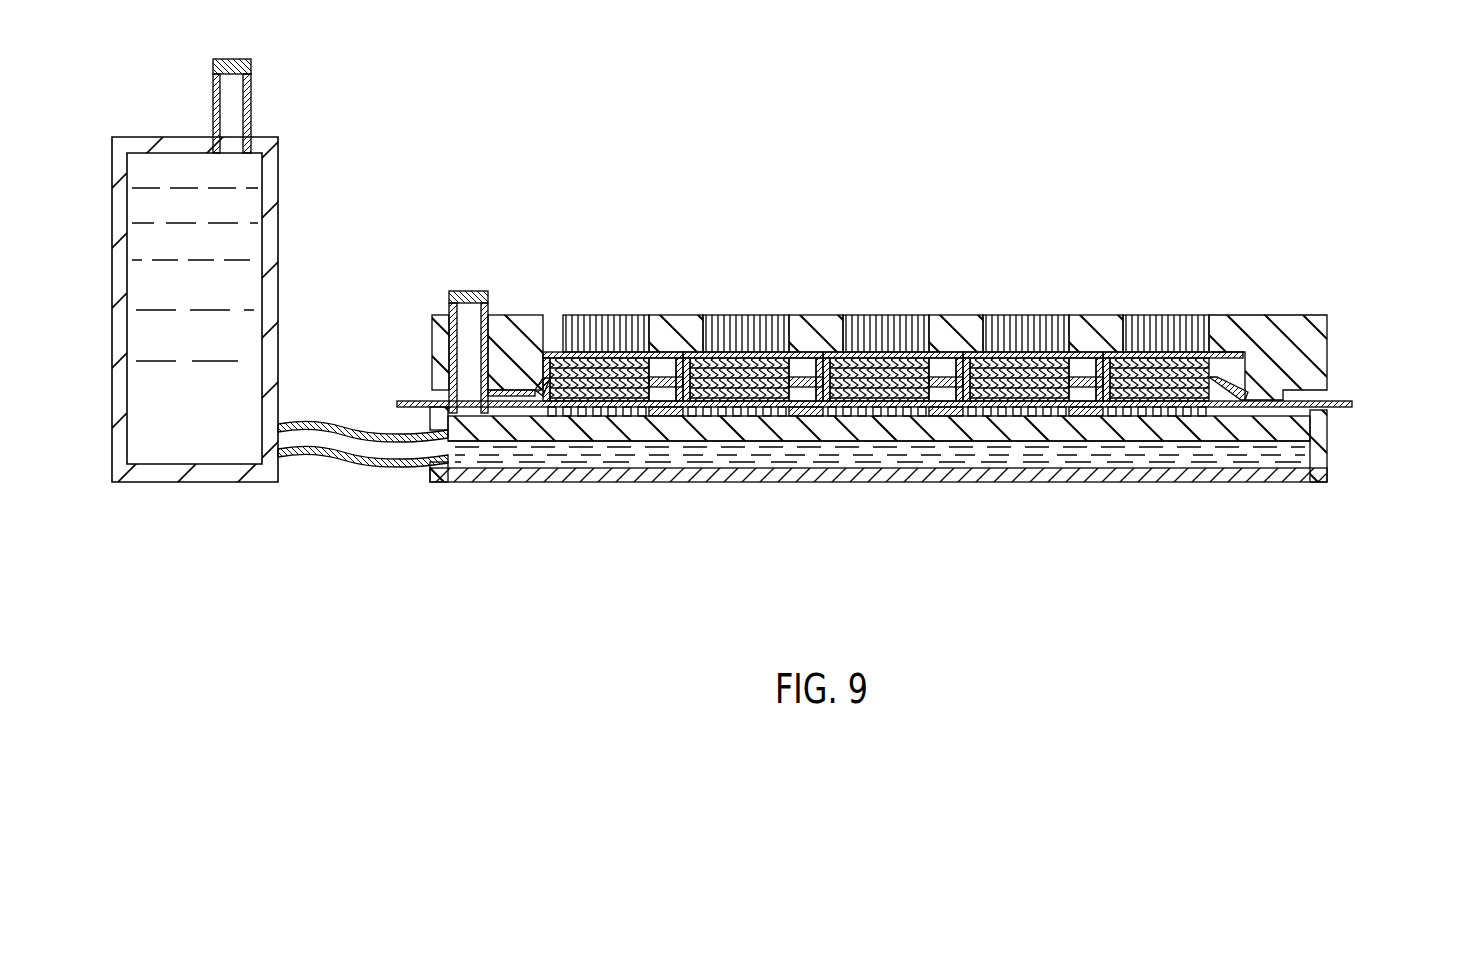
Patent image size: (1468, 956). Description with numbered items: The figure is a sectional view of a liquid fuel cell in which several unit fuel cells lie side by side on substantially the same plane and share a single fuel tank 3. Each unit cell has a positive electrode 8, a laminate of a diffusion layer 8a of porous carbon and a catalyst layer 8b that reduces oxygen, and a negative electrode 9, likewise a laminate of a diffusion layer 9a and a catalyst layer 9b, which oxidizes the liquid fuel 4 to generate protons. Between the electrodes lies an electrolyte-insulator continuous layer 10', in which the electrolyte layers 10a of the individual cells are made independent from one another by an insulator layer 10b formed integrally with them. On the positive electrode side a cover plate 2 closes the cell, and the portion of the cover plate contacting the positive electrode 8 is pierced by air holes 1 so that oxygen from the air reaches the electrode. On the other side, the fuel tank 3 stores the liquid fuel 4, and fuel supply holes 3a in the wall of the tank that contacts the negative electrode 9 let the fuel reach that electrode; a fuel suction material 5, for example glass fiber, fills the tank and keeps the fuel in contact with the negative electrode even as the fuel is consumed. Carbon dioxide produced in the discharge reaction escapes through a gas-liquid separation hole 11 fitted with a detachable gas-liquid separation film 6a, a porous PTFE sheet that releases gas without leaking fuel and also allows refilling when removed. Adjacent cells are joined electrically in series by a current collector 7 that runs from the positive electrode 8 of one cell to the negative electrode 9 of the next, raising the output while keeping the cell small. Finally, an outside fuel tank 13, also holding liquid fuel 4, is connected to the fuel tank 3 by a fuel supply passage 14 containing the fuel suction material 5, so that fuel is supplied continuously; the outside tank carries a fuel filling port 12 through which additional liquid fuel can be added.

The air holes 1 is at (610, 320).
The cover plate 2 is at (676, 325).
The fuel tank 3 is at (750, 470).
The fuel supply holes 3a is at (758, 355).
The liquid fuel 4 is at (233, 218).
The fuel suction material 5 is at (335, 455).
The gas-liquid separation film 6a is at (468, 295).
The current collector 7 is at (412, 398).
The positive electrode 8 is at (1175, 308).
The diffusion layer 8a is at (1160, 363).
The catalyst layer 8b is at (1228, 375).
The negative electrode 9 is at (935, 414).
The diffusion layer 9a is at (915, 461).
The catalyst layer 9b is at (1245, 380).
The electrolyte-insulator continuous layer 10' is at (901, 303).
The electrolyte layers 10a is at (887, 348).
The insulator layer 10b is at (948, 368).
The gas-liquid separation hole 11 is at (466, 357).
The fuel filling port 12 is at (232, 110).
The outside fuel tank 13 is at (268, 268).
The fuel supply passage 14 is at (396, 462).